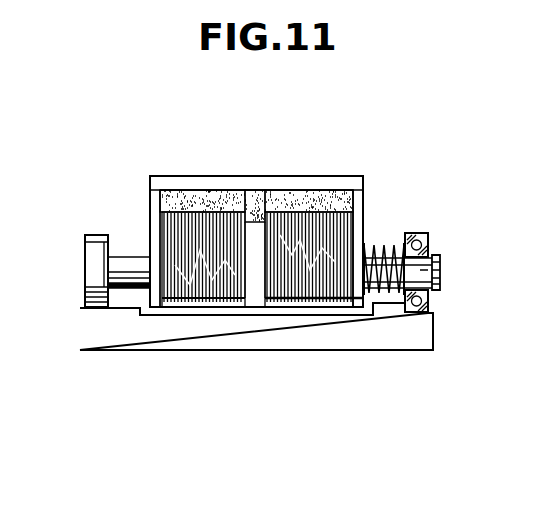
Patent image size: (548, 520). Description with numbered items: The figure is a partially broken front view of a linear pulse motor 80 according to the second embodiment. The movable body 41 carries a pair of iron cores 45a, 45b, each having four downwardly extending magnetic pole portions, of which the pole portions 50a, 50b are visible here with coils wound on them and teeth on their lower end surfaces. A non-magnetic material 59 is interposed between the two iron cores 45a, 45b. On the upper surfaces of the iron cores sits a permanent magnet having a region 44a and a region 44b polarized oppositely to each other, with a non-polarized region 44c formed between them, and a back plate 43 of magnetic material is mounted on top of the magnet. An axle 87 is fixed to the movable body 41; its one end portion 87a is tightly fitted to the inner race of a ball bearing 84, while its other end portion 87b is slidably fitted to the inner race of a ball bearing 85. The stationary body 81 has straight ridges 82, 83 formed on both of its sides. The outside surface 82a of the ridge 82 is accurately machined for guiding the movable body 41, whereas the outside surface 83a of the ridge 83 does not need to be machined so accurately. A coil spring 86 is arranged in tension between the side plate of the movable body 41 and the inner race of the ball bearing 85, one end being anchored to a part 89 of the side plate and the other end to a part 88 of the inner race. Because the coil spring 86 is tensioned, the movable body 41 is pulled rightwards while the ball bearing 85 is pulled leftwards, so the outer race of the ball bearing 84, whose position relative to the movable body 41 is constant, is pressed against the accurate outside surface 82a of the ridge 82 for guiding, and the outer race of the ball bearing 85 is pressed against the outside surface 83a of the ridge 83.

The linear pulse motor 80 is at (188, 123).
The movable body 41 is at (308, 183).
The back plate 43 is at (228, 185).
The region 44a is at (205, 198).
The region 44b is at (328, 200).
The non-polarized region 44c is at (262, 200).
The iron core 45a is at (146, 181).
The iron core 45b is at (398, 197).
The magnetic pole portion 50a is at (198, 303).
The magnetic pole portion 50b is at (292, 303).
The non-magnetic material 59 is at (257, 287).
The stationary body 81 is at (322, 333).
The ridge 82 is at (123, 308).
The outside surface 82a is at (90, 310).
The ridge 83 is at (400, 314).
The outside surface 83a is at (420, 313).
The ball bearing 84 is at (92, 260).
The ball bearing 85 is at (427, 240).
The coil spring 86 is at (375, 304).
The axle 87 is at (143, 292).
The end portion 87a is at (133, 263).
The end portion 87b is at (443, 262).
The part 88 is at (405, 233).
The part 89 is at (372, 243).